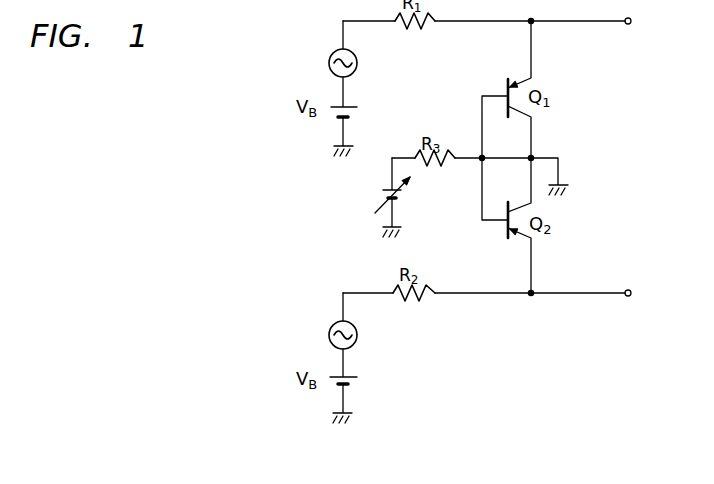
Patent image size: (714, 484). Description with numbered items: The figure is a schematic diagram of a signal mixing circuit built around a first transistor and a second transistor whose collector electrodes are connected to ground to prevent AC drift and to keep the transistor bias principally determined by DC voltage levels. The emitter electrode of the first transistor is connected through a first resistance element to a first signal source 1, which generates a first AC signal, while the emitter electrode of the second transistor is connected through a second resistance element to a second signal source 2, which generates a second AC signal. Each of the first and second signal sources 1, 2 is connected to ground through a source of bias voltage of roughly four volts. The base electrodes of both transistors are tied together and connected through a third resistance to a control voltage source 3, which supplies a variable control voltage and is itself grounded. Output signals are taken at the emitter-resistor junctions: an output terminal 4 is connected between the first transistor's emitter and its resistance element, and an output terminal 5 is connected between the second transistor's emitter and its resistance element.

The first signal source 1 is at (331, 62).
The second signal source 2 is at (330, 336).
The control voltage source 3 is at (378, 204).
The output terminal 4 is at (628, 25).
The output terminal 5 is at (628, 297).